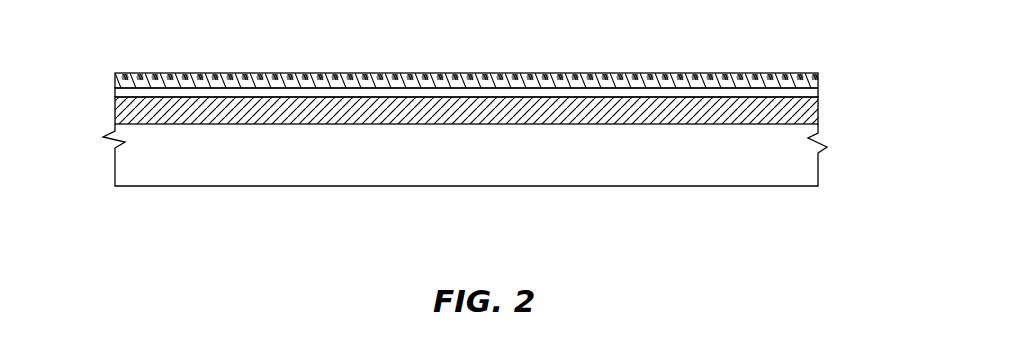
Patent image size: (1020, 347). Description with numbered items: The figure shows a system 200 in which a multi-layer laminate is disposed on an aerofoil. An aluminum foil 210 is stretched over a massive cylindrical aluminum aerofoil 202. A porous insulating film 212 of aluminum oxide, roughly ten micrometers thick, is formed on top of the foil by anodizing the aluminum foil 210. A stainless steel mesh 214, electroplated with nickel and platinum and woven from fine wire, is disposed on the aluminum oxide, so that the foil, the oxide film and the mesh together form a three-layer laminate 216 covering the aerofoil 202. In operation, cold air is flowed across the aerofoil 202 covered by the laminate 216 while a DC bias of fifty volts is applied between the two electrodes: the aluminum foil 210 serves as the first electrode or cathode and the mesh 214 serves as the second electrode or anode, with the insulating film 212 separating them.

The system 200 is at (167, 41).
The aerofoil 202 is at (477, 163).
The aluminum foil 210 is at (808, 110).
The porous insulating film 212 is at (814, 93).
The stainless steel mesh 214 is at (783, 73).
The three-layer laminate 216 is at (71, 67).